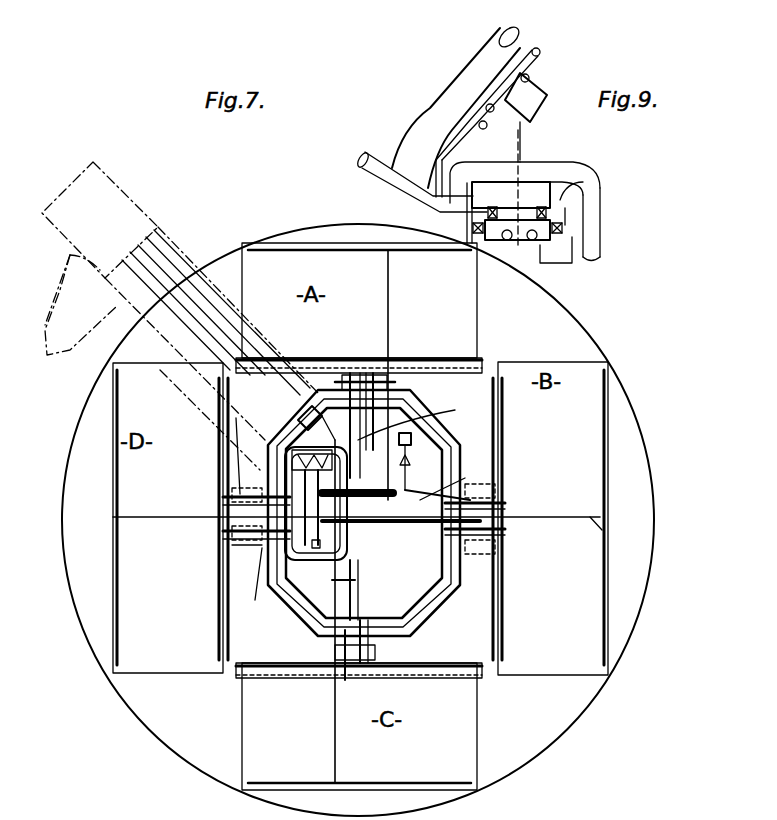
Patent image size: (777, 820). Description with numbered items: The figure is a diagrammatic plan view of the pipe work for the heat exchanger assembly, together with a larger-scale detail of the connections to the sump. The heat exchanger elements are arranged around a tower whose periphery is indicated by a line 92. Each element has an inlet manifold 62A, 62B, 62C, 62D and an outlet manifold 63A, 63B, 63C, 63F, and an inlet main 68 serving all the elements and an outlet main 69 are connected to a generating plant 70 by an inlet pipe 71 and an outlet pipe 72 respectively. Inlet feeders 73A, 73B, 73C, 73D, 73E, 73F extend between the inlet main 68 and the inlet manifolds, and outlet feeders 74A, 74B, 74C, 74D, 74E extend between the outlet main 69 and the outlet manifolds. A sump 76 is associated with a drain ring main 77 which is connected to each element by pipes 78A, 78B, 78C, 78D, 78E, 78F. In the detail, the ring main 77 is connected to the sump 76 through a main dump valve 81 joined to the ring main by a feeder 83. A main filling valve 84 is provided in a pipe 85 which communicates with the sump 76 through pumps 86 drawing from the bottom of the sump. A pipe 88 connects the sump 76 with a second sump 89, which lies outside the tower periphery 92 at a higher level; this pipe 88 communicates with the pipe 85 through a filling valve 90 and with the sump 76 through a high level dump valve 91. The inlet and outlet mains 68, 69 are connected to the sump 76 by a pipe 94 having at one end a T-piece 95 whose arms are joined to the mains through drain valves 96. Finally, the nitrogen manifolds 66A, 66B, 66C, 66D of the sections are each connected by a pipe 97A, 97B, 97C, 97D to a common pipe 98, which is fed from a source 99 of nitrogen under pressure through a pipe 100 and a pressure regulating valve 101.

In FIG. 7, the inlet manifold 62A is at (420, 365).
In FIG. 7, the inlet manifold 62B is at (503, 578).
In FIG. 7, the inlet manifold 62C is at (427, 678).
In FIG. 7, the inlet manifold 62D is at (218, 620).
In FIG. 7, the outlet manifold 63A is at (290, 368).
In FIG. 7, the outlet manifold 63B is at (495, 600).
In FIG. 7, the outlet manifold 63C is at (478, 665).
In FIG. 7, the outlet manifold 63F is at (227, 588).
In FIG. 7, the nitrogen manifold 66A is at (350, 250).
In FIG. 7, the nitrogen manifold 66B is at (606, 402).
In FIG. 7, the nitrogen manifold 66C is at (434, 782).
In FIG. 7, the nitrogen manifold 66D is at (115, 556).
In FIG. 7, the inlet main 68 is at (432, 615).
In FIG. 9, the inlet main 68 is at (425, 110).
In FIG. 7, the outlet main 69 is at (436, 598).
In FIG. 9, the outlet main 69 is at (515, 55).
In FIG. 7, the generating plant 70 is at (118, 200).
In FIG. 7, the inlet pipe 71 is at (155, 248).
In FIG. 7, the outlet pipe 72 is at (160, 275).
In FIG. 7, the inlet feeder 73A is at (392, 383).
In FIG. 7, the inlet feeder 73B is at (495, 548).
In FIG. 7, the inlet feeder 73C is at (335, 652).
In FIG. 7, the inlet feeder 73D is at (235, 490).
In FIG. 7, the inlet feeder 73E is at (490, 490).
In FIG. 7, the inlet feeder 73F is at (235, 546).
In FIG. 7, the outlet feeder 74A is at (330, 392).
In FIG. 7, the outlet feeder 74B is at (506, 531).
In FIG. 7, the outlet feeder 74C is at (375, 652).
In FIG. 7, the outlet feeder 74D is at (224, 497).
In FIG. 7, the outlet feeder 74E is at (506, 506).
In FIG. 7, the sump 76 is at (320, 565).
In FIG. 9, the sump 76 is at (558, 257).
In FIG. 7, the drain ring main 77 is at (312, 555).
In FIG. 9, the drain ring main 77 is at (592, 240).
In FIG. 7, the pipe 78A is at (423, 419).
In FIG. 7, the pipe 78B is at (360, 560).
In FIG. 7, the pipe 78C is at (358, 600).
In FIG. 7, the pipe 78D is at (237, 436).
In FIG. 7, the pipe 78E is at (467, 478).
In FIG. 7, the pipe 78F is at (254, 585).
In FIG. 9, the main dump valve 81 is at (566, 218).
In FIG. 9, the feeder 83 is at (578, 187).
In FIG. 9, the main filling valve 84 is at (578, 172).
In FIG. 9, the pipe 85 is at (512, 208).
In FIG. 9, the pumps 86 is at (512, 240).
In FIG. 7, the pipe 88 is at (193, 420).
In FIG. 9, the pipe 88 is at (375, 158).
In FIG. 7, the second sump 89 is at (81, 305).
In FIG. 9, the filling valve 90 is at (540, 118).
In FIG. 9, the high level dump valve 91 is at (471, 182).
In FIG. 7, the line 92 is at (568, 298).
In FIG. 9, the pipe 94 is at (500, 152).
In FIG. 9, the T-piece 95 is at (547, 92).
In FIG. 9, the drain valves 96 is at (530, 78).
In FIG. 7, the pipe 97A is at (389, 296).
In FIG. 7, the pipe 97B is at (621, 530).
In FIG. 7, the pipe 97C is at (333, 752).
In FIG. 7, the pipe 97D is at (143, 520).
In FIG. 7, the common pipe 98 is at (320, 438).
In FIG. 7, the source of nitrogen 99 is at (411, 437).
In FIG. 7, the pipe 100 is at (401, 511).
In FIG. 7, the pressure regulating valve 101 is at (480, 470).